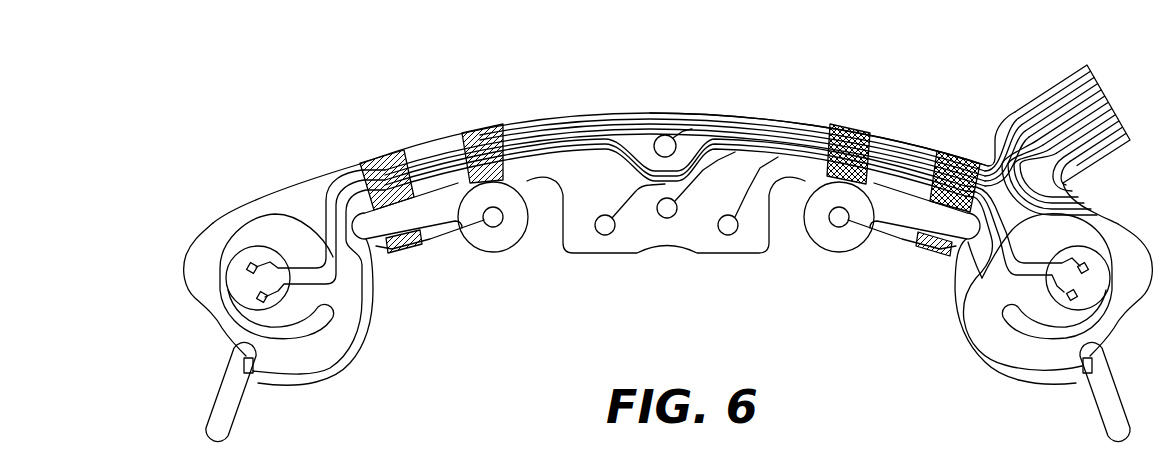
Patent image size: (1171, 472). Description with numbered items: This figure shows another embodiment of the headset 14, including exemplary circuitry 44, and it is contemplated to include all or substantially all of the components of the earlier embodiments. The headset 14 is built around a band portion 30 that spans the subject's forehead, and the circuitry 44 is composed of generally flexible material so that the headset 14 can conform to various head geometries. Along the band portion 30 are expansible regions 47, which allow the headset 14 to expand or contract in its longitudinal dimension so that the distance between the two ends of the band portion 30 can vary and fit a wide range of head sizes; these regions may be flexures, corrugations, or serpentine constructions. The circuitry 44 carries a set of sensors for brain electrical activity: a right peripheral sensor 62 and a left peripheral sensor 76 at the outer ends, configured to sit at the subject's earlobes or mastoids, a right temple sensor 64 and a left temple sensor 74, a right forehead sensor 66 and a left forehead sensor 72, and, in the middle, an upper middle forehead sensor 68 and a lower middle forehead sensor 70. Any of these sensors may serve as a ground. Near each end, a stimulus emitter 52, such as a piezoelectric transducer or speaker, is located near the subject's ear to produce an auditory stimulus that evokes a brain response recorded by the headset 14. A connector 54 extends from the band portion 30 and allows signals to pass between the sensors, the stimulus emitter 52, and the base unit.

The headset 14 is at (256, 119).
The band portion 30 is at (553, 118).
The circuitry 44 is at (804, 120).
The expansible regions 47 is at (469, 124).
The stimulus emitter 52 is at (213, 233).
The connector 54 is at (1107, 100).
The right peripheral sensor 62 is at (257, 380).
The right temple sensor 64 is at (493, 222).
The right forehead sensor 66 is at (605, 232).
The upper middle forehead sensor 68 is at (664, 135).
The lower middle forehead sensor 70 is at (667, 215).
The left forehead sensor 72 is at (728, 232).
The left temple sensor 74 is at (839, 222).
The left peripheral sensor 76 is at (1076, 380).